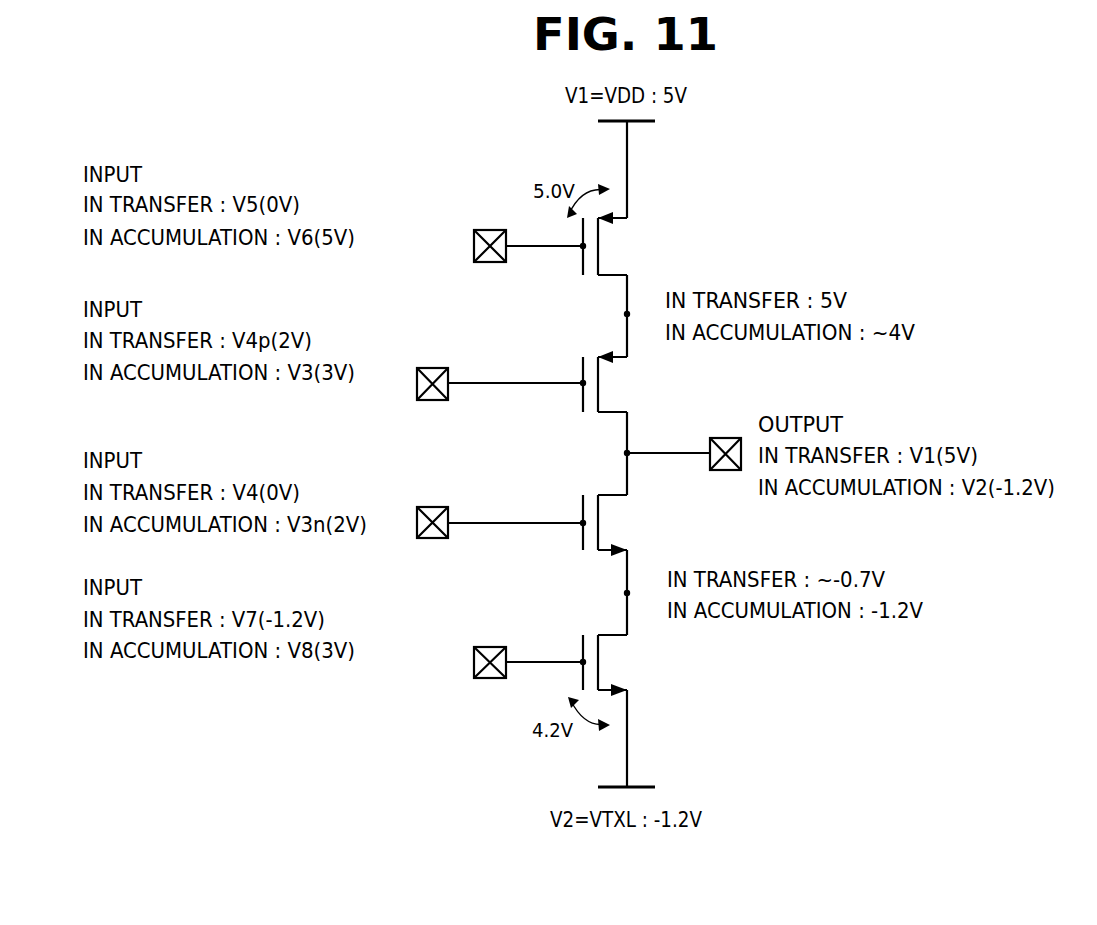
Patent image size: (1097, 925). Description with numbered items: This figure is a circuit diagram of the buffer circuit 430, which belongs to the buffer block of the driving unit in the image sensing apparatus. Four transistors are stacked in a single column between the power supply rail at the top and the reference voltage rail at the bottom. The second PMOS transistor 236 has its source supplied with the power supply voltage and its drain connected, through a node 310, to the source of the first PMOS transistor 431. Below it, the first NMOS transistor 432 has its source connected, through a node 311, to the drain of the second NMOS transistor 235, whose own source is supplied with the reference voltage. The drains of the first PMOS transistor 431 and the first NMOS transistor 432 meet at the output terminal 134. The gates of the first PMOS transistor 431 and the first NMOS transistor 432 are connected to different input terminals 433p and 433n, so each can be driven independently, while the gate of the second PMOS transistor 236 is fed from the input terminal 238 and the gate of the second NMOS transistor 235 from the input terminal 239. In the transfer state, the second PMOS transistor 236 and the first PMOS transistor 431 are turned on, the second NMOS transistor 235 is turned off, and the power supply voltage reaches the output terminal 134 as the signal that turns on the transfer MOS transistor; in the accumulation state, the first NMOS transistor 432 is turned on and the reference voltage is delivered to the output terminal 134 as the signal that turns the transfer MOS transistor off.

The buffer circuit 430 is at (400, 795).
The second PMOS transistor 236 is at (628, 243).
The first PMOS transistor 431 is at (627, 377).
The first NMOS transistor 432 is at (627, 523).
The second NMOS transistor 235 is at (628, 664).
The node 310 is at (612, 313).
The node 311 is at (612, 592).
The input terminal 238 is at (488, 229).
The input terminal 433p is at (432, 366).
The input terminal 433n is at (432, 505).
The input terminal 239 is at (487, 645).
The output terminal 134 is at (722, 437).